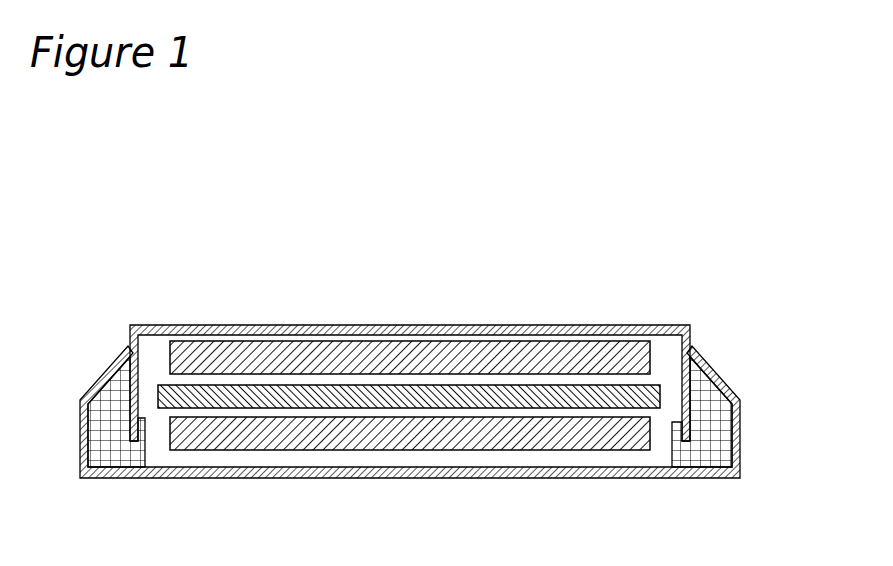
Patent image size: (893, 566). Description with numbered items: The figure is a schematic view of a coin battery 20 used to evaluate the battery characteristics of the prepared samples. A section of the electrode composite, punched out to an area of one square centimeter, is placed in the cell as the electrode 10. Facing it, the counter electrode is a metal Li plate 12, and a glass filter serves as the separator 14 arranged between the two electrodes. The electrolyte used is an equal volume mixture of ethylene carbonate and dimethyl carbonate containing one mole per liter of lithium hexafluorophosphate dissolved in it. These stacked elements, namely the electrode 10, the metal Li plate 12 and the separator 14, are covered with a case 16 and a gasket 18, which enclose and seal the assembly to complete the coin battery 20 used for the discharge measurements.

The electrode 10 is at (456, 440).
The metal Li plate 12 is at (426, 352).
The separator 14 is at (558, 393).
The case 16 is at (200, 328).
The gasket 18 is at (98, 440).
The coin battery 20 is at (389, 226).